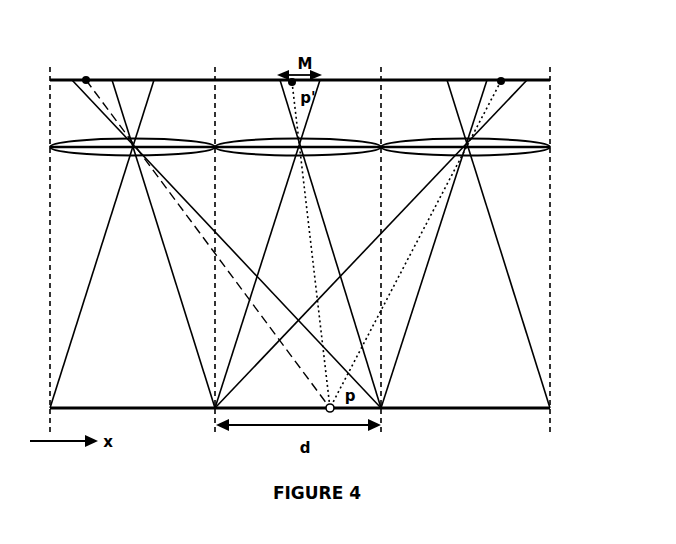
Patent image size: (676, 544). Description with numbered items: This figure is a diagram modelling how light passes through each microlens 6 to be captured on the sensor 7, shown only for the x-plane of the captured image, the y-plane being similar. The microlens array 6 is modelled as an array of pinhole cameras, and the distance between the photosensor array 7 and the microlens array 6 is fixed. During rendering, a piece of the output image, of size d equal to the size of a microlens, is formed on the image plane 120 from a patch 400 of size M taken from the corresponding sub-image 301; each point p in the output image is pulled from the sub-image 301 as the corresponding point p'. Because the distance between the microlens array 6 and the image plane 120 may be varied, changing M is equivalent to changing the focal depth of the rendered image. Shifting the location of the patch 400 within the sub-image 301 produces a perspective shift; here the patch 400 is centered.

The sensor 7 is at (521, 76).
The microlens 6 is at (532, 160).
The image plane 120 is at (560, 400).
The sub-image 301 is at (46, 53).
The patch 400 is at (139, 90).